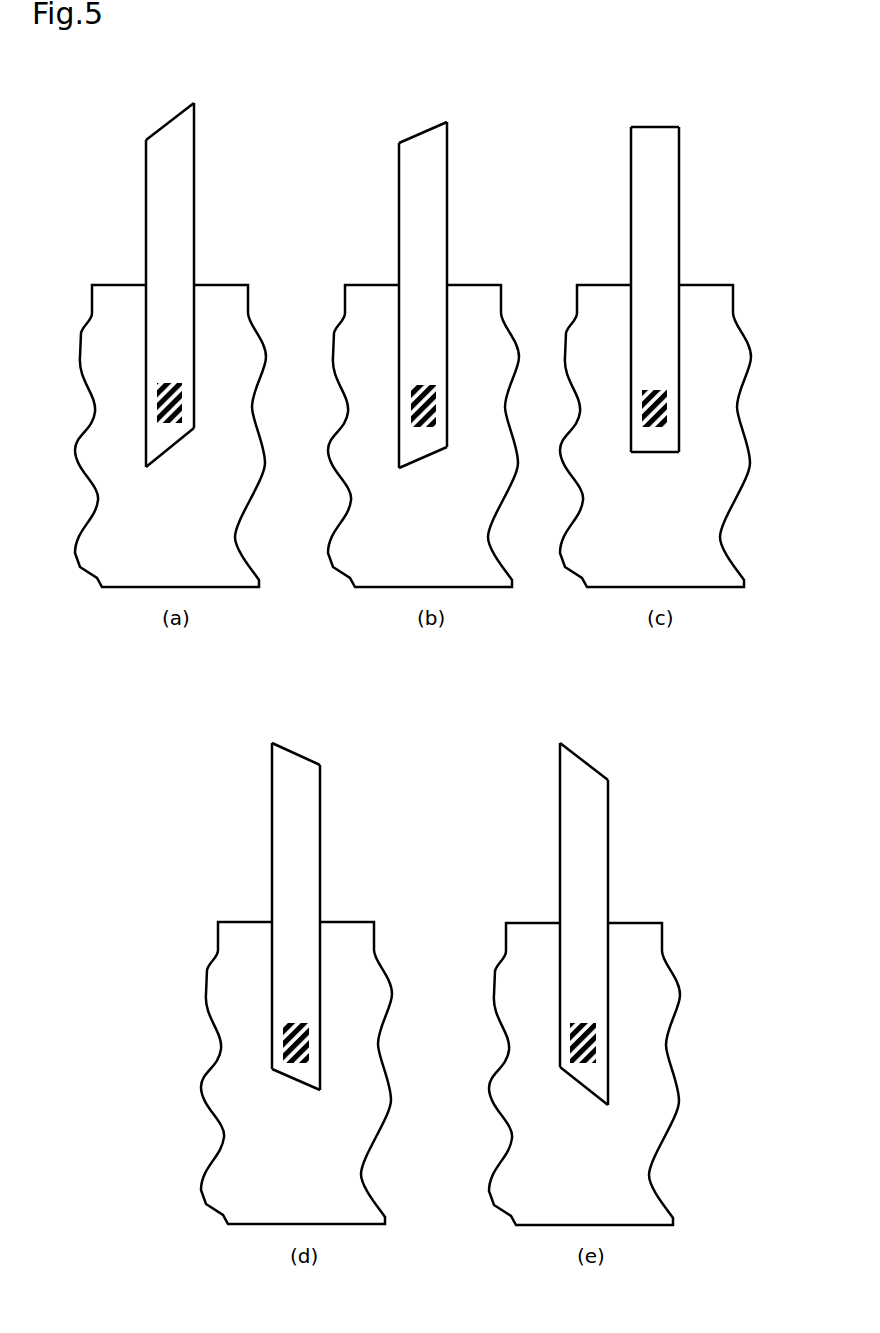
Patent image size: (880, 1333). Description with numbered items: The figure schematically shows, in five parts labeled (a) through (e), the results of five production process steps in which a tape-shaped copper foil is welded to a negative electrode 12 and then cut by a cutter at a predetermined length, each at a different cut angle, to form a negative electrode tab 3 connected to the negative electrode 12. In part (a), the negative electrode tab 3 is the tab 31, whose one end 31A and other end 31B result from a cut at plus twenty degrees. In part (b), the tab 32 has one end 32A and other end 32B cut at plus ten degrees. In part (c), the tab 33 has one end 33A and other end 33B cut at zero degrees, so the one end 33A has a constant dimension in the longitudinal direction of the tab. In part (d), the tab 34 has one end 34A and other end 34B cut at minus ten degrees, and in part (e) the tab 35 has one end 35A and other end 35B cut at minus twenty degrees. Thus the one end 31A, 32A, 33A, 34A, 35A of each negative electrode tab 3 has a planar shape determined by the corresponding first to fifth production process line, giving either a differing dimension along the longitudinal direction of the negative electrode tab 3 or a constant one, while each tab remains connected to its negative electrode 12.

The negative electrode tab 3 is at (406, 620).
The negative electrode 12 is at (240, 315).
The negative electrode tab 31 is at (164, 288).
The one end 31A is at (165, 440).
The other end 31B is at (172, 134).
The negative electrode tab 32 is at (418, 290).
The one end 32A is at (418, 443).
The other end 32B is at (427, 137).
The negative electrode tab 33 is at (648, 292).
The one end 33A is at (650, 445).
The other end 33B is at (657, 138).
The negative electrode tab 34 is at (274, 921).
The one end 34A is at (303, 1073).
The other end 34B is at (295, 765).
The negative electrode tab 35 is at (557, 922).
The one end 35A is at (588, 1078).
The other end 35B is at (577, 767).